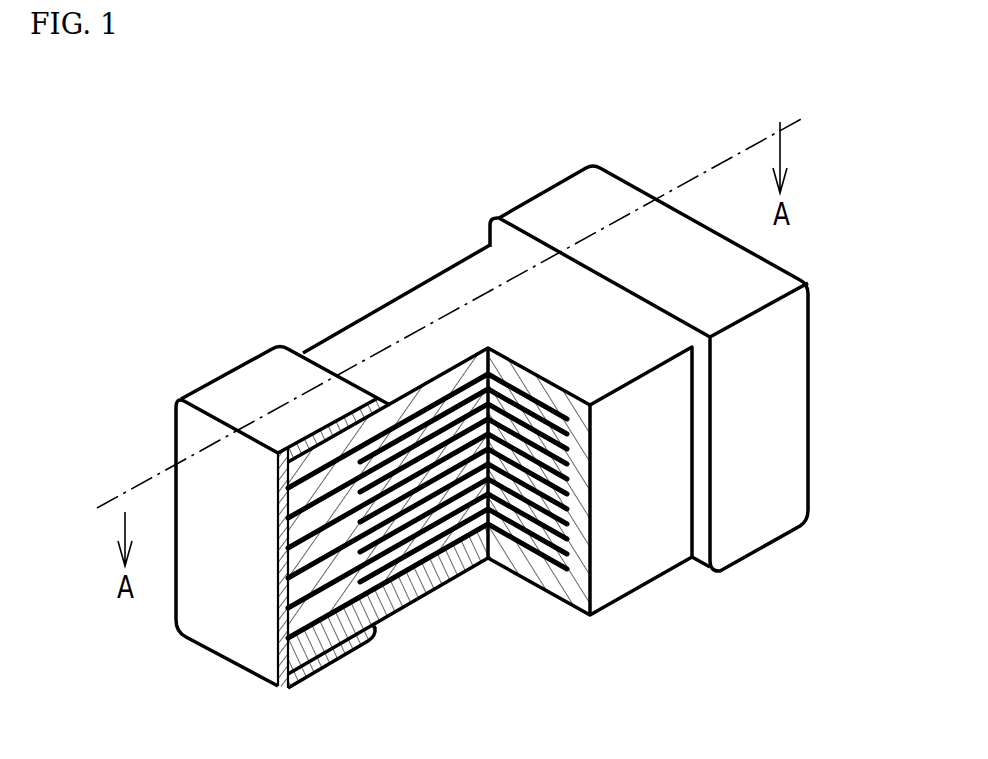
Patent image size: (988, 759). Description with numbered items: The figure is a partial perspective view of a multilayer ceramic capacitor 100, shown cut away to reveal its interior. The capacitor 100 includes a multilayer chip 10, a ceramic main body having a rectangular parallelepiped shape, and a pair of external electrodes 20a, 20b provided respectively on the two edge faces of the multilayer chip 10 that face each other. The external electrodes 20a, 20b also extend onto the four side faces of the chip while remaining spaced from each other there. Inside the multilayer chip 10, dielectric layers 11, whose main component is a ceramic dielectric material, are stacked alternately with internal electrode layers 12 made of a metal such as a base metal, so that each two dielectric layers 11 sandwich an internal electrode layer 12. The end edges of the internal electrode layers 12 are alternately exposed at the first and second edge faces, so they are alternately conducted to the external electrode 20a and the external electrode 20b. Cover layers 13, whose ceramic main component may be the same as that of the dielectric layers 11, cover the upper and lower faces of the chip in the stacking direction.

The multilayer ceramic capacitor 100 is at (913, 94).
The multilayer chip 10 is at (343, 332).
The dielectric layer 11 is at (406, 568).
The internal electrode layer 12 is at (439, 540).
The cover layer 13 is at (455, 283).
The external electrode 20a is at (240, 362).
The external electrode 20b is at (544, 198).